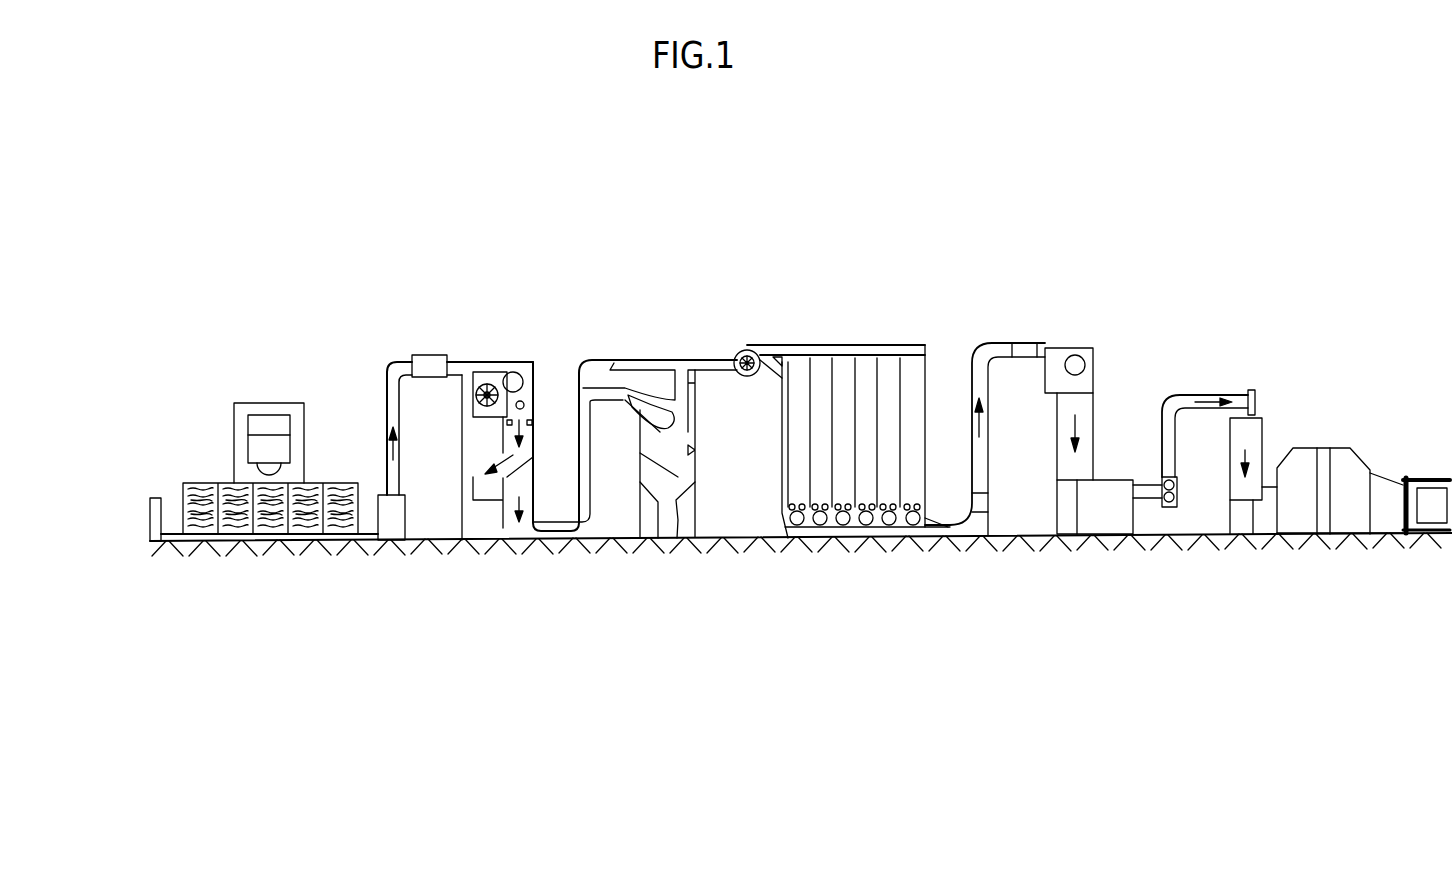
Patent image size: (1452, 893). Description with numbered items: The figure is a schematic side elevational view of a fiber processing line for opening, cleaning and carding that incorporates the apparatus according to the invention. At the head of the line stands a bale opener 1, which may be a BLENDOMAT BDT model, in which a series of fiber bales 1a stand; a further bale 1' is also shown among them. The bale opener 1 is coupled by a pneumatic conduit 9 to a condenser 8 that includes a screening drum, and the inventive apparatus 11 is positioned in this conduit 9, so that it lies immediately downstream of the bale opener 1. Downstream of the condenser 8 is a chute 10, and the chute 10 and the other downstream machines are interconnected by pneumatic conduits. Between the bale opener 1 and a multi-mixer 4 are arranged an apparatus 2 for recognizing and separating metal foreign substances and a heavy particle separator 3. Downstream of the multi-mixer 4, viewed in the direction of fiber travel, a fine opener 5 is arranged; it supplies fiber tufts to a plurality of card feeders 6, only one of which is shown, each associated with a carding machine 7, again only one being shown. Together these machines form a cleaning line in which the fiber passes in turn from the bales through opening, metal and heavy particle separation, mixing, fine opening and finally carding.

The bale opener 1 is at (254, 433).
The fiber bales 1a is at (190, 503).
The fiber bales 1' is at (270, 461).
The apparatus for recognizing and separating metal foreign substances 2 is at (485, 453).
The heavy particle separator 3 is at (685, 508).
The multi-mixer 4 is at (842, 365).
The fine opener 5 is at (1105, 518).
The card feeder 6 is at (1250, 443).
The carding machine 7 is at (1342, 458).
The condenser 8 is at (512, 370).
The pneumatic conduit 9 is at (472, 360).
The chute 10 is at (528, 510).
The inventive apparatus 11 is at (427, 356).